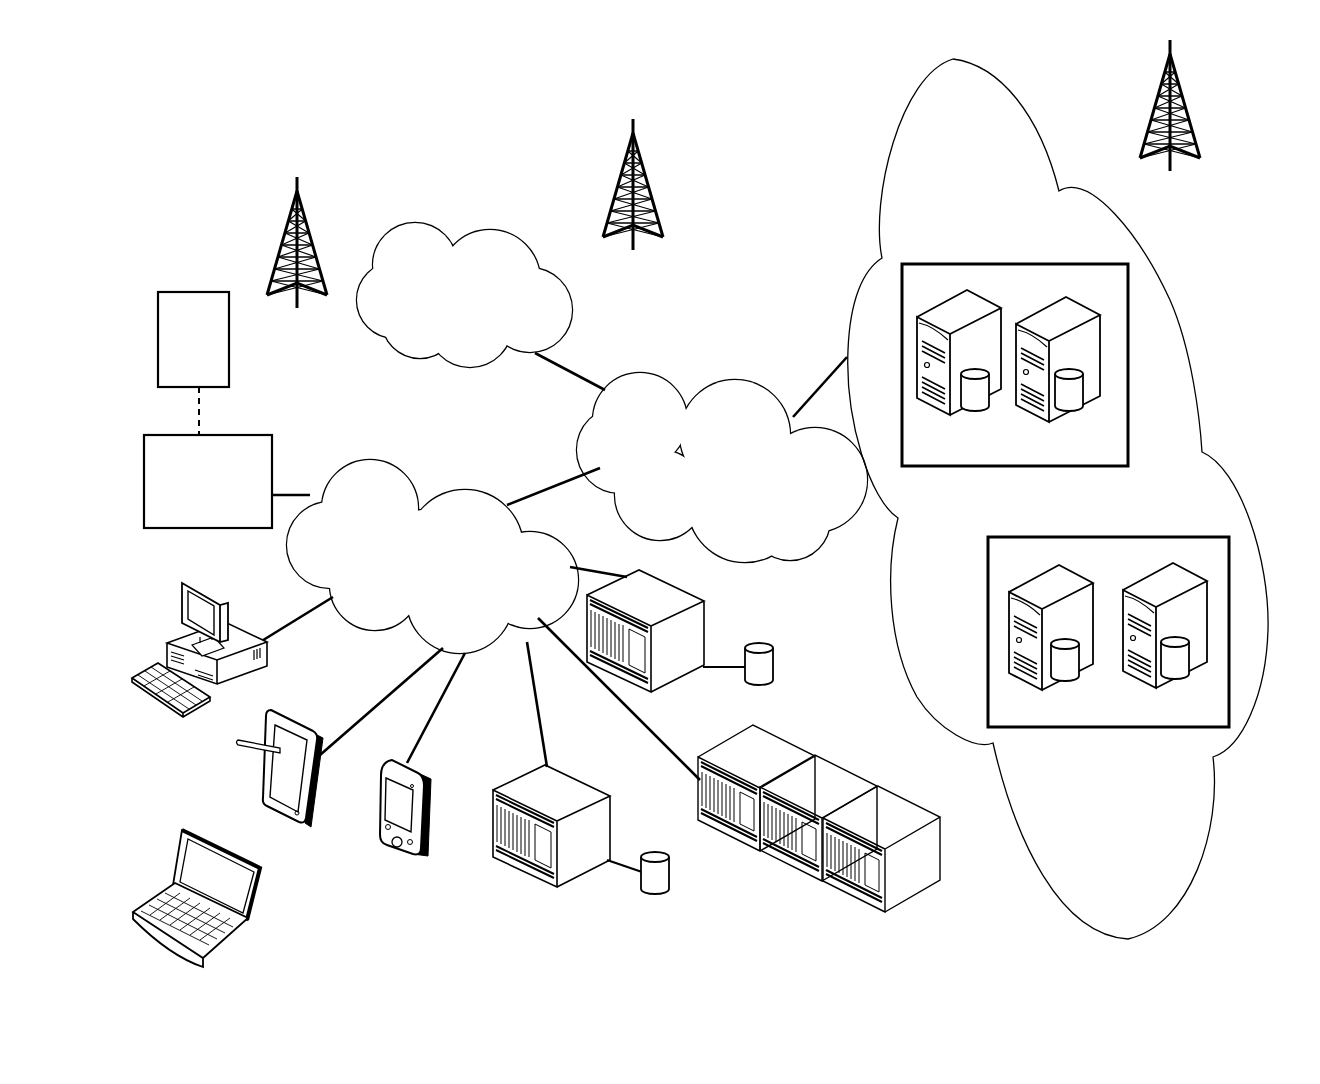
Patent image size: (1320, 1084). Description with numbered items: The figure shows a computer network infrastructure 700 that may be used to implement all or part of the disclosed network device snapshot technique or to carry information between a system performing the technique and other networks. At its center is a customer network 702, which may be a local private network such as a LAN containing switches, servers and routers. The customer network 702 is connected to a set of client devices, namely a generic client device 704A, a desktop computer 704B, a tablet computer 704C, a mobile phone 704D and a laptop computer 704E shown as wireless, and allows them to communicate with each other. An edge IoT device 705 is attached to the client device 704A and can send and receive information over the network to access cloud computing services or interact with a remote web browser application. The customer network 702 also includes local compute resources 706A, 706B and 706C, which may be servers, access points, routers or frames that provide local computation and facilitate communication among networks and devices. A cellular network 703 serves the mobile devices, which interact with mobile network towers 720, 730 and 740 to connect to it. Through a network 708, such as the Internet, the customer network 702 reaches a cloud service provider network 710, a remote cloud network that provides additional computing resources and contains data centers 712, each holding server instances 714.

The computer network infrastructure 700 is at (385, 153).
The customer network 702 is at (398, 467).
The cellular network 703 is at (488, 245).
The client device 704A is at (235, 435).
The desktop computer 704B is at (210, 592).
The tablet computer 704C is at (290, 713).
The mobile phone 704D is at (428, 772).
The laptop computer 704E is at (263, 878).
The edge IoT device 705 is at (173, 290).
The local compute resource 706A is at (555, 792).
The local compute resource 706B is at (705, 622).
The local compute resources 706C is at (773, 735).
The network 708 is at (658, 372).
The cloud service provider network 710 is at (1169, 266).
The data center 712 is at (943, 264).
The server instance 714 is at (968, 408).
The mobile network tower 720 is at (633, 203).
The mobile network tower 730 is at (297, 259).
The mobile network tower 740 is at (1170, 122).